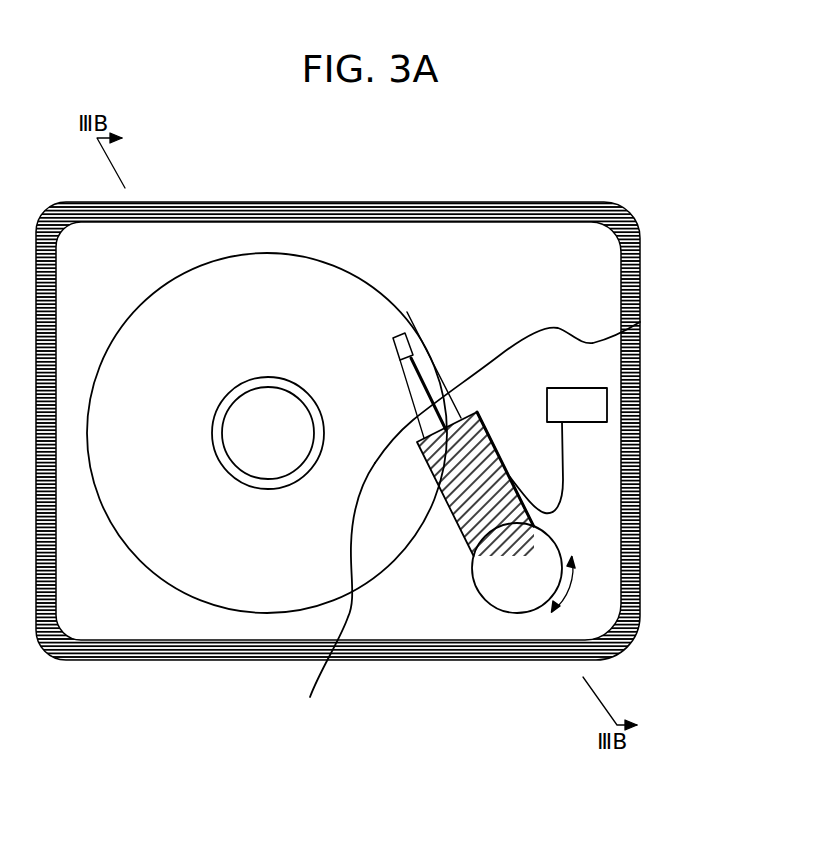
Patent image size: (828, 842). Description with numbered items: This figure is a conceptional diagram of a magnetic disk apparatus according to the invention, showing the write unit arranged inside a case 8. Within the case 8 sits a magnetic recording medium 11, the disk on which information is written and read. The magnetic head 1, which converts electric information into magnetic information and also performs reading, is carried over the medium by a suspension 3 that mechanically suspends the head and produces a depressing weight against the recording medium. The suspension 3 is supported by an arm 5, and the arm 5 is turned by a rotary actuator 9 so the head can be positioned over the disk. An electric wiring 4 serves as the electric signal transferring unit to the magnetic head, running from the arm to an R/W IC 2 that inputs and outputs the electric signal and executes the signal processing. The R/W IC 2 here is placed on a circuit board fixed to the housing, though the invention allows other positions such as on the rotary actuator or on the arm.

The magnetic head 1 is at (405, 336).
The R/W IC 2 is at (594, 410).
The suspension 3 is at (335, 597).
The electric wiring 4 is at (640, 322).
The arm 5 is at (462, 505).
The case 8 is at (635, 563).
The rotary actuator 9 is at (548, 550).
The magnetic recording media 11 is at (287, 273).